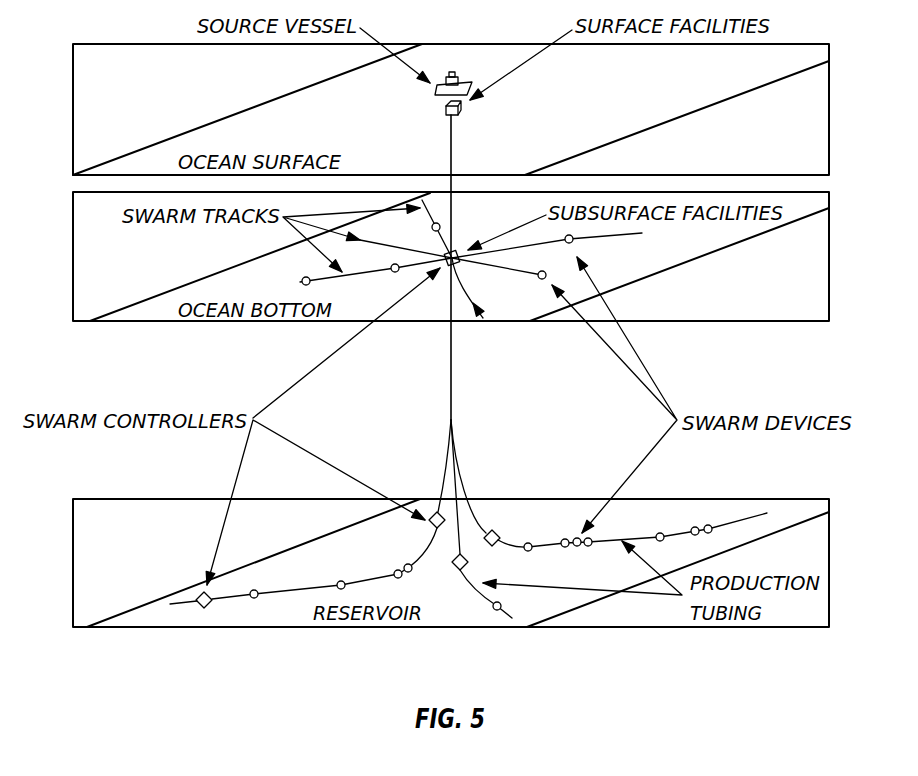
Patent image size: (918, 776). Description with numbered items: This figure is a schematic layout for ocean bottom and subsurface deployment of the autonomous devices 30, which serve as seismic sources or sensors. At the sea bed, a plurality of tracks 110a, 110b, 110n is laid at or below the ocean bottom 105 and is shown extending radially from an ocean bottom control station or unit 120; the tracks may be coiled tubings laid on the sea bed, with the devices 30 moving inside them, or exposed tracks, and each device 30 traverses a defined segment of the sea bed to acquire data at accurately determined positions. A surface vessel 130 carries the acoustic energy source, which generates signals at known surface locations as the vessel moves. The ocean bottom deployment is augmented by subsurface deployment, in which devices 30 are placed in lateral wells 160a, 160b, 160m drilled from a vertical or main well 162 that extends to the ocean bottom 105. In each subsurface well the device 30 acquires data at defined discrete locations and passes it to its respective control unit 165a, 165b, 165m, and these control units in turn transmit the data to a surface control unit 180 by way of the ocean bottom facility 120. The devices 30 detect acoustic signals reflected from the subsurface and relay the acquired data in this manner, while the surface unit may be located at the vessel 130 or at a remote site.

The autonomous device 30 is at (432, 228).
The ocean bottom 105 is at (822, 265).
The track 110a is at (483, 318).
The track 110b is at (642, 233).
The track 110n is at (342, 273).
The ocean bottom control station 120 is at (455, 255).
The surface vessel 130 is at (394, 124).
The lateral well 160a is at (738, 522).
The lateral well 160b is at (490, 602).
The lateral well 160m is at (270, 593).
The main well 162 is at (451, 410).
The control unit 165a is at (497, 532).
The control unit 165b is at (455, 565).
The control unit 165m is at (402, 474).
The surface control unit 180 is at (457, 117).